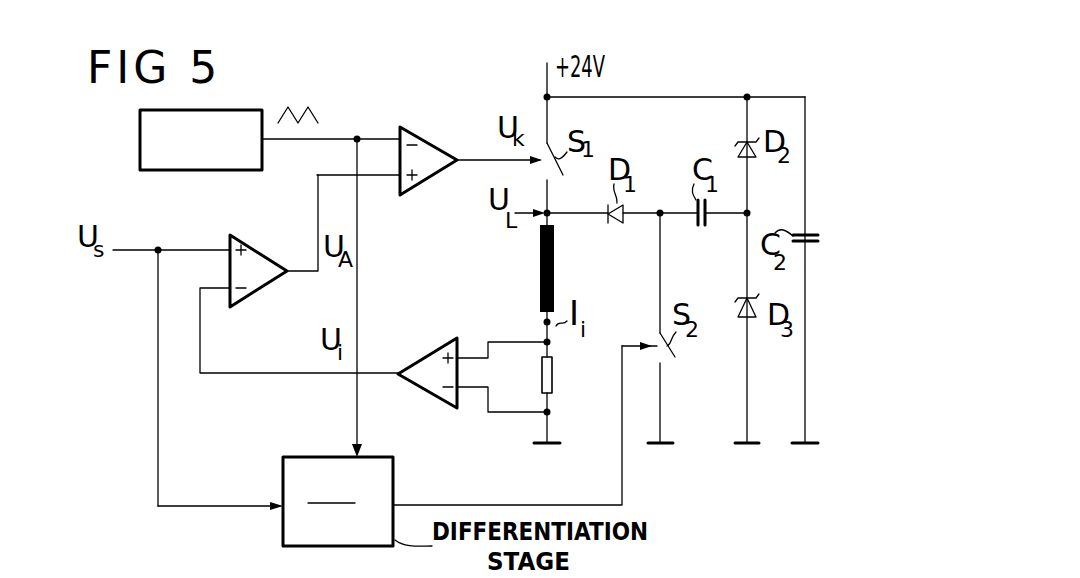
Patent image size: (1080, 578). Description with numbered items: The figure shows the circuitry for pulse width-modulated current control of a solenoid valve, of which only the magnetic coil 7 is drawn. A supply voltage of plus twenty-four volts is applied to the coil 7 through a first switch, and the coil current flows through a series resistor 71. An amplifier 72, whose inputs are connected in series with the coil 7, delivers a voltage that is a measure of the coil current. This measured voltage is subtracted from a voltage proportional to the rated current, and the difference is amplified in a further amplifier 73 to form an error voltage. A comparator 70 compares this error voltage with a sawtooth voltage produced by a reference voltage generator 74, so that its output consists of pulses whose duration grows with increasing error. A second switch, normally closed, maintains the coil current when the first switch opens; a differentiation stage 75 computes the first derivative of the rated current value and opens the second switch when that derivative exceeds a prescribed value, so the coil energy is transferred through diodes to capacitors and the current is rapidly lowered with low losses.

The magnetic coil 7 is at (540, 262).
The comparator 70 is at (428, 170).
The resistor 71 is at (542, 372).
The amplifier 72 is at (424, 381).
The amplifier 73 is at (266, 261).
The reference voltage generator 74 is at (205, 171).
The differentiation stage 75 is at (396, 478).